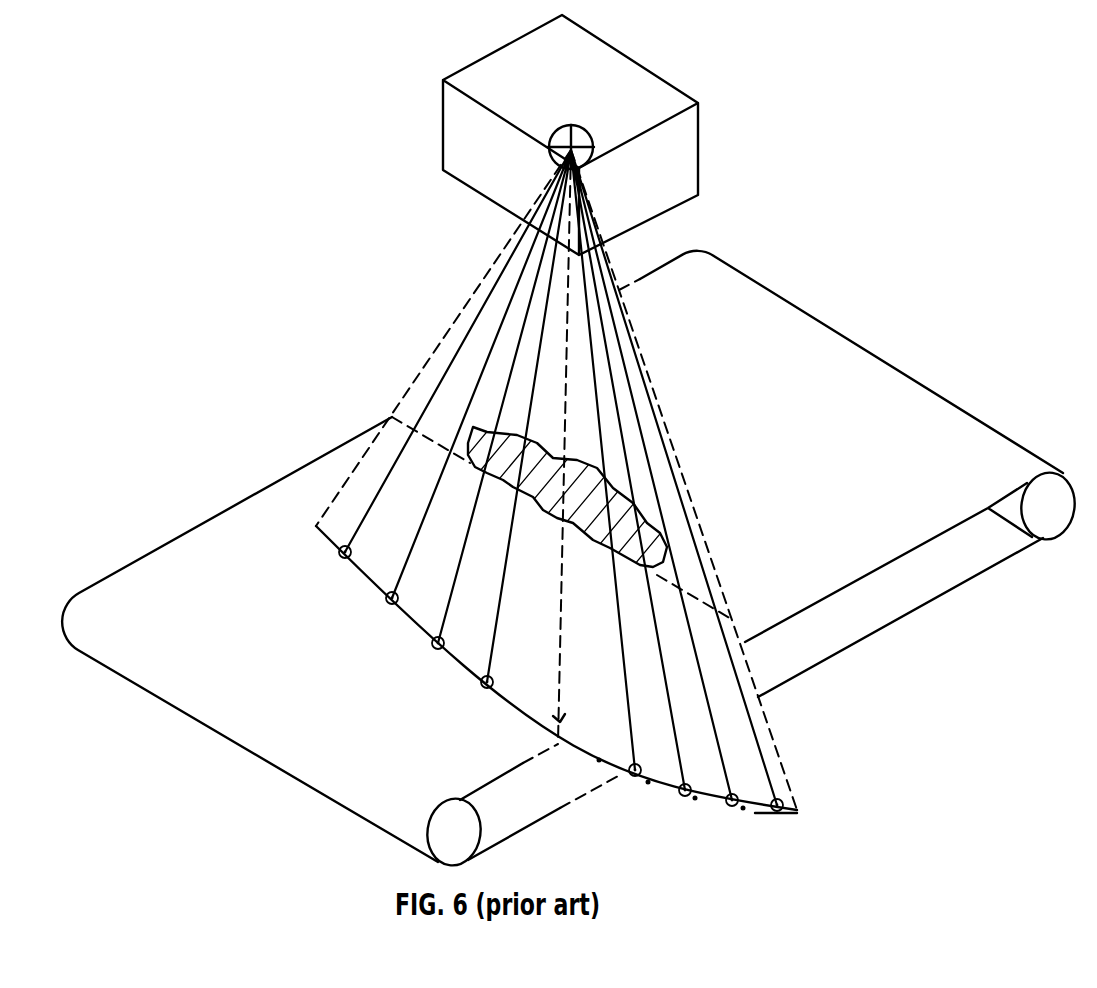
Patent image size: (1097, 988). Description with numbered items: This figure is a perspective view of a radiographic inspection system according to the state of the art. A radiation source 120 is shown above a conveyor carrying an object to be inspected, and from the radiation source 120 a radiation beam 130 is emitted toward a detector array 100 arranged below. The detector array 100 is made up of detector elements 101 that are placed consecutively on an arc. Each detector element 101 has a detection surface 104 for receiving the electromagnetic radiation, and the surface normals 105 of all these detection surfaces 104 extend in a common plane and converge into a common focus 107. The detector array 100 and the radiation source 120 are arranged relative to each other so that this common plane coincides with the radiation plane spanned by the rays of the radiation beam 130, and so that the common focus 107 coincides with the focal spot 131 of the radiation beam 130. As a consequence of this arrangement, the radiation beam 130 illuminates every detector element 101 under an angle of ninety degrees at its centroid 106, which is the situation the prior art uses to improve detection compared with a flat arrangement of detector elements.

The detector array 100 is at (814, 798).
The detector element 101 is at (320, 535).
The detection surface 104 is at (322, 528).
The surface normal 105 is at (368, 507).
The centroid 106 is at (338, 558).
The common focus 107 is at (659, 184).
The radiation source 120 is at (653, 73).
The radiation beam 130 is at (472, 292).
The focal spot 131 is at (587, 170).